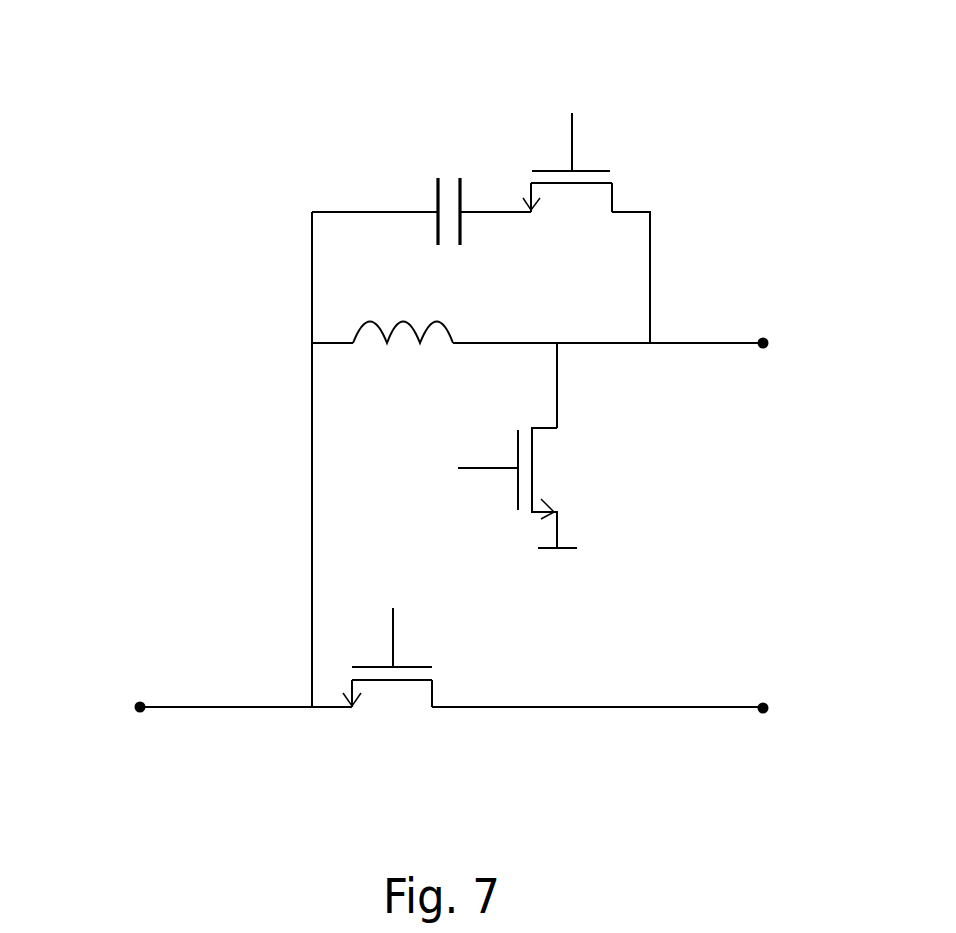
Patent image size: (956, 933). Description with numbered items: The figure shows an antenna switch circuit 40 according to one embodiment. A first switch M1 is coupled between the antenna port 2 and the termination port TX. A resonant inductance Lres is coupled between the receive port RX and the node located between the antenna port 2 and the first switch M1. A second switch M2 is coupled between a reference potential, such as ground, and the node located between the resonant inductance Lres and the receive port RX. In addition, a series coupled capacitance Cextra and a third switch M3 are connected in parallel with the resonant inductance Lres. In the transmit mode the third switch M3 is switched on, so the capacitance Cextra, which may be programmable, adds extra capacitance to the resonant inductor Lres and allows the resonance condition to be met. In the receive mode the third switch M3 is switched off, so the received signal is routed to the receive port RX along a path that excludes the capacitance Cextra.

The antenna port 2 is at (141, 705).
The antenna switch circuit 40 is at (486, 398).
The first switch M1 is at (387, 688).
The second switch M2 is at (543, 488).
The third switch M3 is at (567, 183).
The series coupled capacitance Cextra is at (446, 189).
The resonant inductance Lres is at (403, 308).